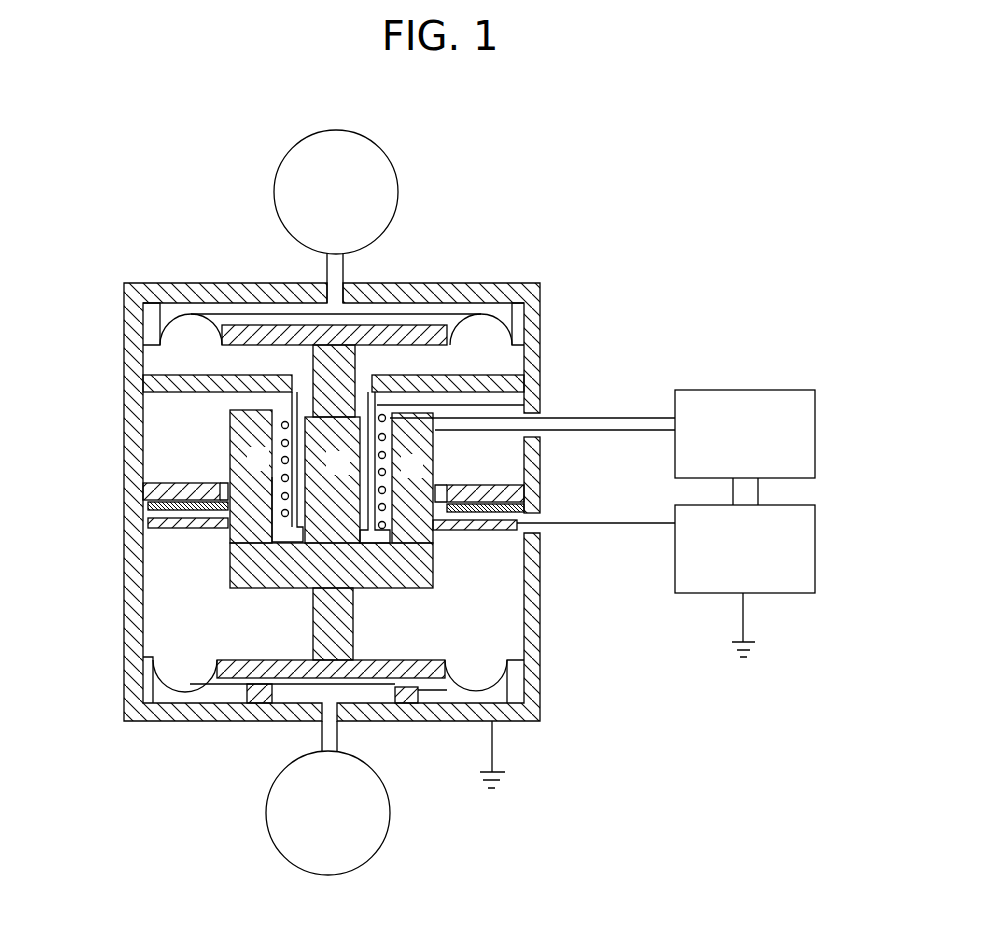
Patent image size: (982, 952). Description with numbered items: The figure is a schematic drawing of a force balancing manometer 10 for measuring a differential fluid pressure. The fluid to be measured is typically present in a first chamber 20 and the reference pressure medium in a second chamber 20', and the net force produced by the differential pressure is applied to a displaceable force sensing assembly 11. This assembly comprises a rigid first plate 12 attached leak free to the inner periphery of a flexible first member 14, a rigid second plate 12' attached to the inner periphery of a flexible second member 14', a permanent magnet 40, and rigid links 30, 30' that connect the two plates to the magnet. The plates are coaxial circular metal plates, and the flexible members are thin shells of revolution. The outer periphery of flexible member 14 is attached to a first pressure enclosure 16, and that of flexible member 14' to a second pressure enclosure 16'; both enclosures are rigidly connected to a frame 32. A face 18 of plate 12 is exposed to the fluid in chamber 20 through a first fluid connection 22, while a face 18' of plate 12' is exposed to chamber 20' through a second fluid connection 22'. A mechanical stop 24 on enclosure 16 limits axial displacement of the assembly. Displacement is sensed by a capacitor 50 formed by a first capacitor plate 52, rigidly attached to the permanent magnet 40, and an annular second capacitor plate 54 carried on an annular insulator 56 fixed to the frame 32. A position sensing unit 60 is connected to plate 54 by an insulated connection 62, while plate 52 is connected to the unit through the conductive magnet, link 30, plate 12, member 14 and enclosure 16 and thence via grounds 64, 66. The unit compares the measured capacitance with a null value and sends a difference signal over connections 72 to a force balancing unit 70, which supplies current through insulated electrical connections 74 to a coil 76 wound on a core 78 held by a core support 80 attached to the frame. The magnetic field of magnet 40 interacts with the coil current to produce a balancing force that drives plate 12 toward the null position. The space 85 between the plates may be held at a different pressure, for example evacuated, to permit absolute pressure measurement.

The force balancing manometer 10 is at (497, 183).
The displaceable force sensing assembly 11 is at (425, 608).
The first plate 12 is at (295, 706).
The second plate 12' is at (295, 287).
The flexible first member 14 is at (484, 748).
The flexible second member 14' is at (520, 295).
The first pressure enclosure 16 is at (457, 650).
The second pressure enclosure 16' is at (441, 322).
The face of first plate 18 is at (324, 709).
The face of second plate 18' is at (336, 254).
The first chamber 20 is at (328, 837).
The second chamber 20' is at (367, 186).
The first fluid connection 22 is at (277, 754).
The second fluid connection 22' is at (389, 269).
The mechanical stop 24 is at (410, 721).
The rigid link 30 is at (214, 624).
The rigid link 30' is at (215, 381).
The frame 32 is at (125, 315).
The permanent magnet 40 is at (248, 560).
The capacitor 50 is at (528, 575).
The first capacitor plate 52 is at (150, 521).
The second capacitor plate 54 is at (143, 503).
The annular insulator 56 is at (172, 483).
The position sensing unit 60 is at (815, 558).
The connection 62 is at (577, 523).
The ground 64 is at (492, 763).
The ground 66 is at (743, 628).
The force balancing unit 70 is at (815, 418).
The connections 72 is at (805, 494).
The electrical connections 74 is at (609, 412).
The coil 76 is at (283, 443).
The core 78 is at (545, 403).
The core support 80 is at (487, 378).
The space between plates 85 is at (500, 601).